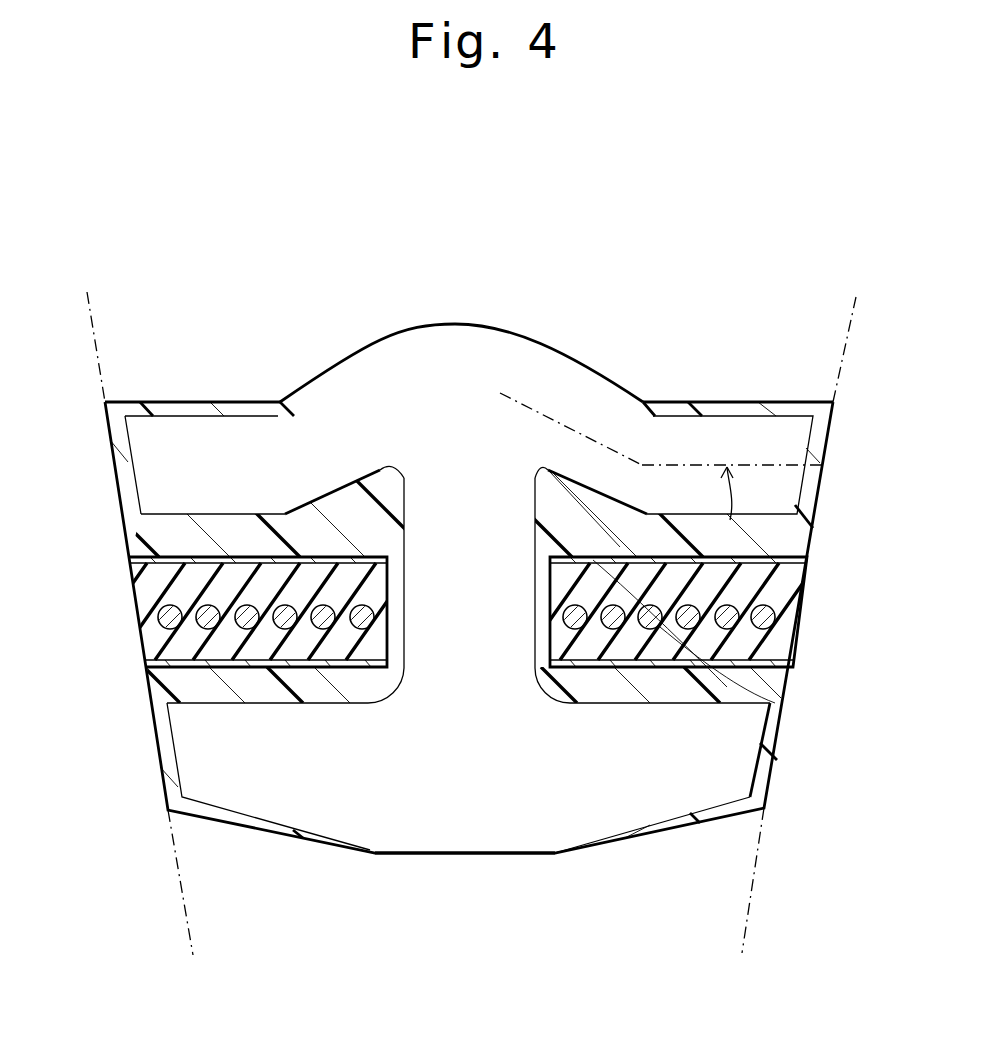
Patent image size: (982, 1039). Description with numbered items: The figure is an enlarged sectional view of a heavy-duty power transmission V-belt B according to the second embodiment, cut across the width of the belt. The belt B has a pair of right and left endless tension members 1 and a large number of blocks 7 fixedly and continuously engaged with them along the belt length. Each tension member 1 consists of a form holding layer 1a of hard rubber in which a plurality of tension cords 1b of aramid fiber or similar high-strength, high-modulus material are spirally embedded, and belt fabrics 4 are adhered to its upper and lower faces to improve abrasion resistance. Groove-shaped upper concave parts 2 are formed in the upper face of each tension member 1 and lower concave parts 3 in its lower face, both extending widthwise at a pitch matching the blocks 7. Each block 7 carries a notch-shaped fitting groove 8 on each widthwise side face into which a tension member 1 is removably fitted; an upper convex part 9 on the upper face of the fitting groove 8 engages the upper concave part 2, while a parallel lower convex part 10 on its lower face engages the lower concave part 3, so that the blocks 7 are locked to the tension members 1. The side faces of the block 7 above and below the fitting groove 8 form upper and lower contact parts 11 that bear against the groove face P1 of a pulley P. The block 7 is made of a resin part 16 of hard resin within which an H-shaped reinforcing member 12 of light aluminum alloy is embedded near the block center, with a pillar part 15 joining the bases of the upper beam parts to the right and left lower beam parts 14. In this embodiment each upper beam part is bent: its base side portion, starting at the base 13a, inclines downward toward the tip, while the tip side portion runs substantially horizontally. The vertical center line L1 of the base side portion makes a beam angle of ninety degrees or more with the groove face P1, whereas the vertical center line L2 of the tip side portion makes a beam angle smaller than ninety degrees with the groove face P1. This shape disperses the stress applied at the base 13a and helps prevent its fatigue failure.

The tension member 1 is at (137, 630).
The form holding layer 1a is at (140, 595).
The tension cords 1b is at (208, 630).
The upper concave part 2 is at (405, 528).
The lower concave part 3 is at (280, 690).
The belt fabric 4 is at (388, 562).
The block 7 is at (709, 400).
The fitting groove 8 is at (388, 600).
The upper convex part 9 is at (283, 575).
The lower convex part 10 is at (255, 658).
The contact part 11 is at (110, 450).
The reinforcing member 12 is at (466, 322).
The base of the upper beam part 13a is at (398, 476).
The lower beam part 14 is at (455, 856).
The pillar part 15 is at (375, 522).
The resin part 16 is at (127, 518).
The heavy-duty power transmission V-belt B is at (190, 400).
The pulley P is at (853, 303).
The groove face P1 is at (193, 930).
The vertical center line of the base side portion L1 is at (563, 415).
The vertical center line of the tip side portion L2 is at (760, 463).